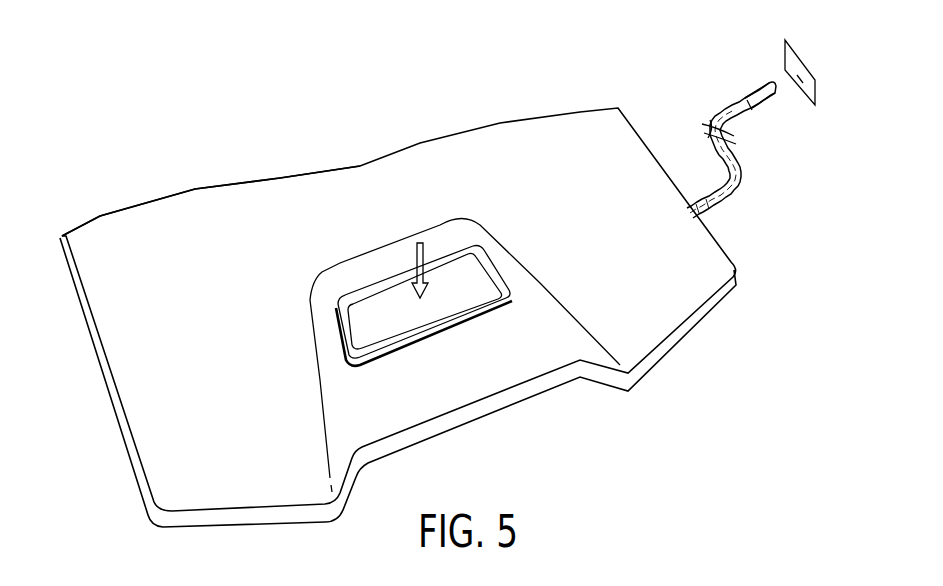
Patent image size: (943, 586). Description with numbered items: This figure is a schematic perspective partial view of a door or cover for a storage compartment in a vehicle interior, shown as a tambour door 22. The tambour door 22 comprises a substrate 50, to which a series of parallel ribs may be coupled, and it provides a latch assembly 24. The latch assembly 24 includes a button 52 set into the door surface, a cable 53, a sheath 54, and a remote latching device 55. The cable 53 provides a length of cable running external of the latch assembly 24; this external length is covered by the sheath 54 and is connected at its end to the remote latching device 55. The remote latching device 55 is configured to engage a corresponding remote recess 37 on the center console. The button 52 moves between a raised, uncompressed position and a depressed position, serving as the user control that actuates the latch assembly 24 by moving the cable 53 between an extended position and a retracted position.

The tambour door 22 is at (297, 205).
The substrate 50 is at (193, 208).
The latch assembly 24 is at (495, 363).
The button 52 is at (440, 299).
The sheath 54 is at (742, 164).
The remote latching device 55 is at (756, 93).
The cable 53 is at (750, 118).
The remote recess 37 is at (801, 77).